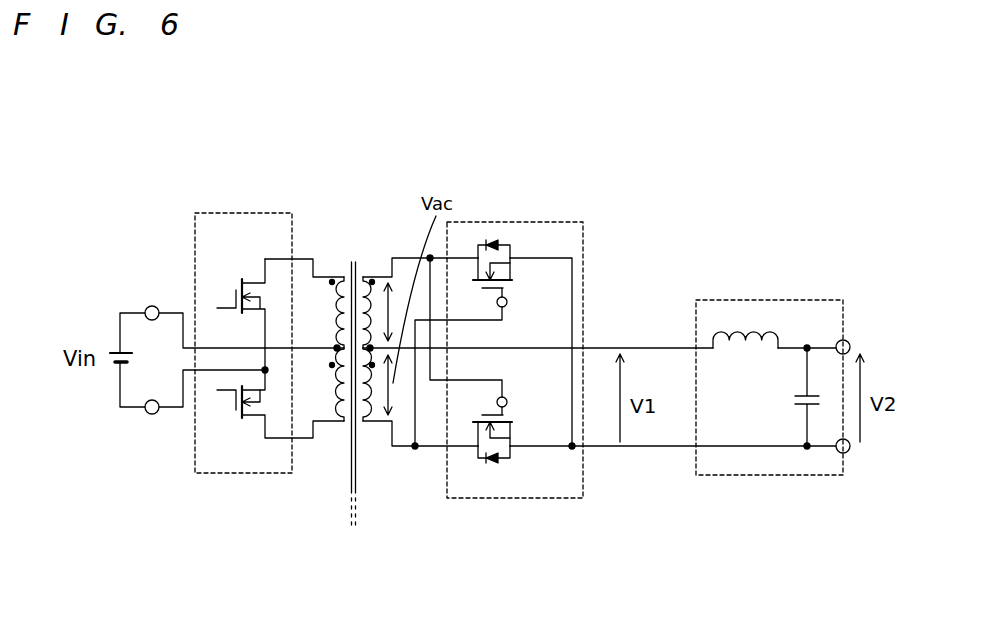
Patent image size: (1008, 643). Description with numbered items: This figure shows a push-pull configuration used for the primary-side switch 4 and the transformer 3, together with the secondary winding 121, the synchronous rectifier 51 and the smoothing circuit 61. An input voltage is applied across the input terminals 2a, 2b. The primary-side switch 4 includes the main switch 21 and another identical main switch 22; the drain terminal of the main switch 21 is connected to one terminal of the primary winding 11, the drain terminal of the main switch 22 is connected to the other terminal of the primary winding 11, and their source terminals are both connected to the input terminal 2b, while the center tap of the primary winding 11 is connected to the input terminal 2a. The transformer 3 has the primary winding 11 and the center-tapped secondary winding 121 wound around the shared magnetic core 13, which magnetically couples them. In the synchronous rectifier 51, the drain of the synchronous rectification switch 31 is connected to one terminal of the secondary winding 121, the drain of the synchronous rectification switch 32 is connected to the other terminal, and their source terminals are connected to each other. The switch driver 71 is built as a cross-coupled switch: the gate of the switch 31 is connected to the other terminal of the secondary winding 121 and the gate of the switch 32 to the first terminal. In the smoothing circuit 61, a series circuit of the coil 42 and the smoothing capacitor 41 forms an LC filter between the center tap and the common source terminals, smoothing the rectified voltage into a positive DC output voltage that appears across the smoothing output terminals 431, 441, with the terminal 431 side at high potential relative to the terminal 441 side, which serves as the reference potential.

The input terminal 2a is at (152, 306).
The input terminal 2b is at (152, 414).
The primary-side switch 4 is at (246, 203).
The main switch 21 is at (255, 282).
The main switch 22 is at (257, 416).
The transformer 3 is at (357, 251).
The primary winding 11 is at (332, 273).
The magnetic core 13 is at (348, 482).
The secondary winding 121 is at (371, 278).
The switch driver 71 is at (390, 302).
The synchronous rectifier 51 is at (522, 215).
The synchronous rectification switch 31 is at (508, 272).
The synchronous rectification switch 32 is at (508, 432).
The smoothing circuit 61 is at (781, 292).
The coil 42 is at (733, 343).
The smoothing capacitor 41 is at (802, 392).
The smoothing output terminal 431 is at (850, 340).
The smoothing output terminal 441 is at (848, 453).